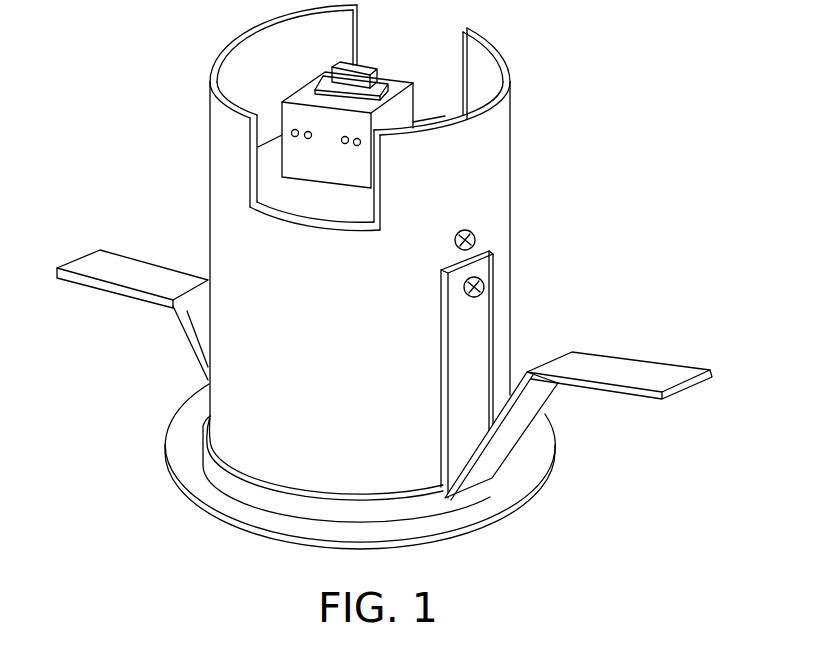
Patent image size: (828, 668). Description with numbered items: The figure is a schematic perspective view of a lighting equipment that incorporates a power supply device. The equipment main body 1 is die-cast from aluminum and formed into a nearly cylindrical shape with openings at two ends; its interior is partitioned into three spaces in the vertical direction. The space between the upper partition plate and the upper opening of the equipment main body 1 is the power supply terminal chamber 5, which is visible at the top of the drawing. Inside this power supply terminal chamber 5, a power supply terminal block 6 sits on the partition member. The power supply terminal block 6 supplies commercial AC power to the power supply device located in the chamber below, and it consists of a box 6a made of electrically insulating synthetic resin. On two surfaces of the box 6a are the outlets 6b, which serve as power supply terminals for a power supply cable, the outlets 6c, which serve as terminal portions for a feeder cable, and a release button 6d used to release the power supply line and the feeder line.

The equipment main body 1 is at (495, 207).
The power supply terminal chamber 5 is at (447, 93).
The power supply terminal block 6 is at (340, 115).
The box 6a is at (400, 107).
The outlets 6b is at (291, 132).
The outlets 6c is at (344, 144).
The release button 6d is at (357, 78).